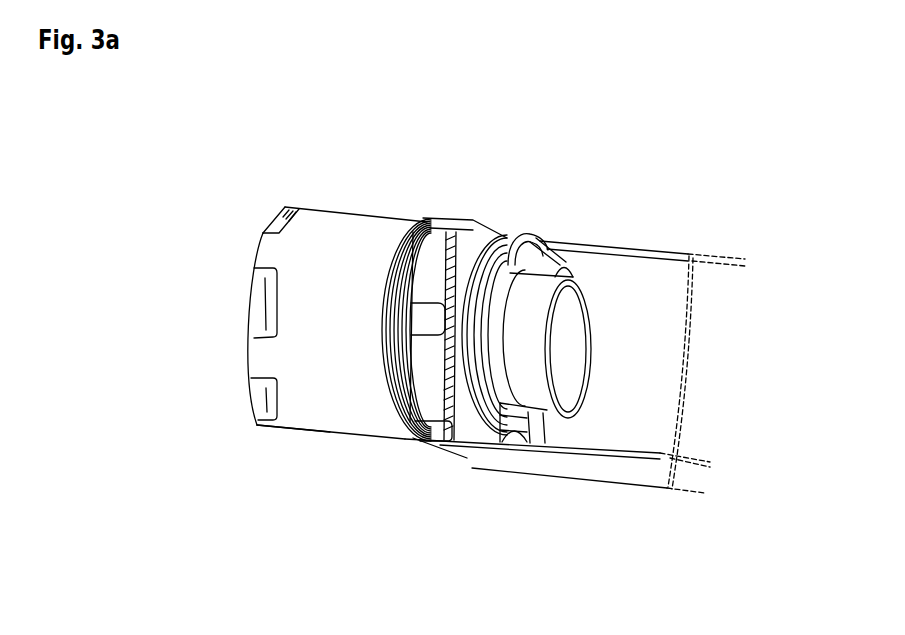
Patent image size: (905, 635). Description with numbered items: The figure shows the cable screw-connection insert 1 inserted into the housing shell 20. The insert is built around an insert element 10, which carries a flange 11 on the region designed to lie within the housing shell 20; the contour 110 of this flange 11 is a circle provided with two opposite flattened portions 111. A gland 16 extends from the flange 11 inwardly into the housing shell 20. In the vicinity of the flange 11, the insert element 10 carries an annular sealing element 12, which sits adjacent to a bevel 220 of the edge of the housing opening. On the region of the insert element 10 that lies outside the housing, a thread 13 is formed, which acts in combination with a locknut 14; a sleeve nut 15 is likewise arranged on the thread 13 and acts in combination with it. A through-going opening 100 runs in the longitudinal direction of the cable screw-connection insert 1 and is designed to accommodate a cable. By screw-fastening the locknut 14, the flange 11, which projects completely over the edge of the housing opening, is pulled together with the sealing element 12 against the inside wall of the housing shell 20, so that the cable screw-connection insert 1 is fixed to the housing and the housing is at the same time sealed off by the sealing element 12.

The cable screw-connection insert 1 is at (333, 116).
The insert element 10 is at (547, 250).
The flange 11 is at (537, 248).
The contour 110 is at (507, 238).
The flattened portions 111 is at (497, 420).
The sealing element 12 is at (470, 433).
The bevel 220 is at (470, 433).
The thread 13 is at (405, 437).
The locknut 14 is at (447, 220).
The sleeve nut 15 is at (344, 231).
The gland 16 is at (533, 420).
The housing shell 20 is at (650, 243).
The through-going opening 100 is at (573, 340).